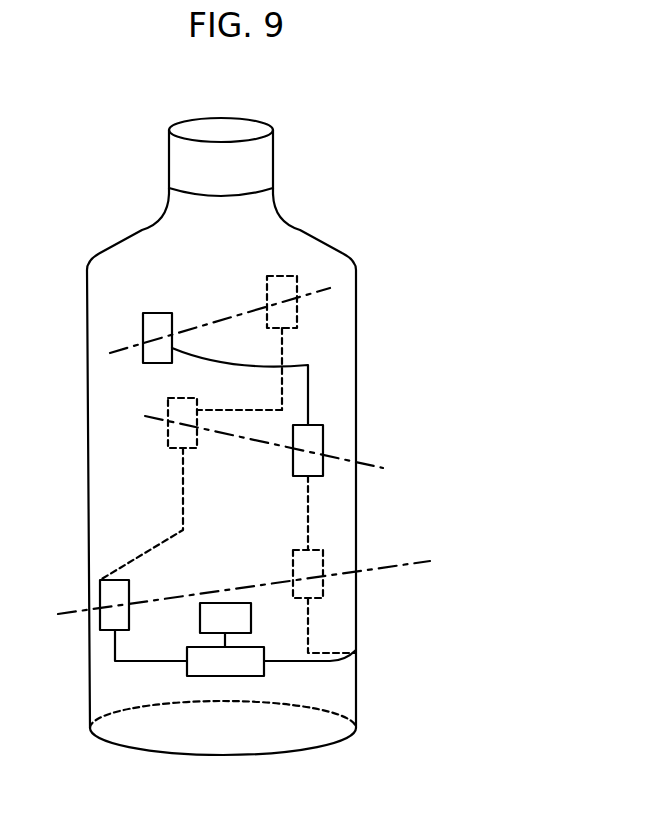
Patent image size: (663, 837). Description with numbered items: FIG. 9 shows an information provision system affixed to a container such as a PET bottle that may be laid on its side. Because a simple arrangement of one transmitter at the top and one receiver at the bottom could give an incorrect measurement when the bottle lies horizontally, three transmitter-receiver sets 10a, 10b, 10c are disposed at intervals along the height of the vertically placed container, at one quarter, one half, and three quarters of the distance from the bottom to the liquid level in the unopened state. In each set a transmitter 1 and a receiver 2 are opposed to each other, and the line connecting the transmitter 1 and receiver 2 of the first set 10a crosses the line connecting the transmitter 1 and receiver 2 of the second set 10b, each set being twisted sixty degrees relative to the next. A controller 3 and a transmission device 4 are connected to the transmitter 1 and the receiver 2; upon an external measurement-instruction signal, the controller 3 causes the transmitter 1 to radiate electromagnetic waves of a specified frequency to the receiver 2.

The transmitter 1 is at (158, 315).
The receiver 2 is at (298, 313).
The controller 3 is at (237, 678).
The transmission device 4 is at (213, 605).
The first set 10a is at (462, 258).
The second set 10b is at (469, 395).
The third set 10c is at (464, 530).